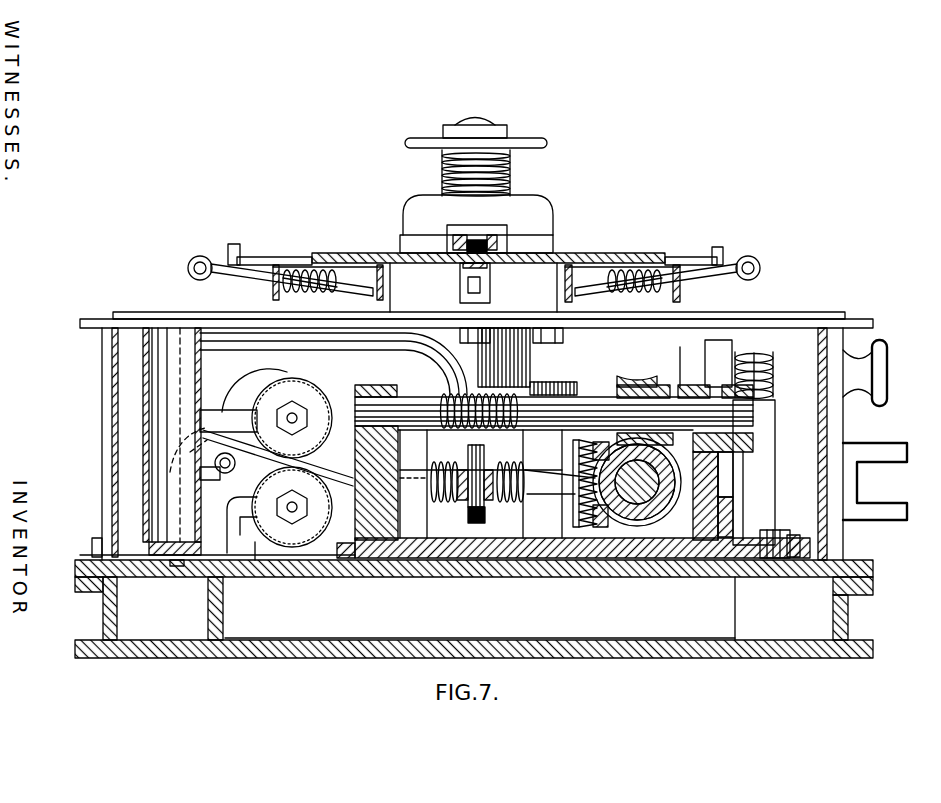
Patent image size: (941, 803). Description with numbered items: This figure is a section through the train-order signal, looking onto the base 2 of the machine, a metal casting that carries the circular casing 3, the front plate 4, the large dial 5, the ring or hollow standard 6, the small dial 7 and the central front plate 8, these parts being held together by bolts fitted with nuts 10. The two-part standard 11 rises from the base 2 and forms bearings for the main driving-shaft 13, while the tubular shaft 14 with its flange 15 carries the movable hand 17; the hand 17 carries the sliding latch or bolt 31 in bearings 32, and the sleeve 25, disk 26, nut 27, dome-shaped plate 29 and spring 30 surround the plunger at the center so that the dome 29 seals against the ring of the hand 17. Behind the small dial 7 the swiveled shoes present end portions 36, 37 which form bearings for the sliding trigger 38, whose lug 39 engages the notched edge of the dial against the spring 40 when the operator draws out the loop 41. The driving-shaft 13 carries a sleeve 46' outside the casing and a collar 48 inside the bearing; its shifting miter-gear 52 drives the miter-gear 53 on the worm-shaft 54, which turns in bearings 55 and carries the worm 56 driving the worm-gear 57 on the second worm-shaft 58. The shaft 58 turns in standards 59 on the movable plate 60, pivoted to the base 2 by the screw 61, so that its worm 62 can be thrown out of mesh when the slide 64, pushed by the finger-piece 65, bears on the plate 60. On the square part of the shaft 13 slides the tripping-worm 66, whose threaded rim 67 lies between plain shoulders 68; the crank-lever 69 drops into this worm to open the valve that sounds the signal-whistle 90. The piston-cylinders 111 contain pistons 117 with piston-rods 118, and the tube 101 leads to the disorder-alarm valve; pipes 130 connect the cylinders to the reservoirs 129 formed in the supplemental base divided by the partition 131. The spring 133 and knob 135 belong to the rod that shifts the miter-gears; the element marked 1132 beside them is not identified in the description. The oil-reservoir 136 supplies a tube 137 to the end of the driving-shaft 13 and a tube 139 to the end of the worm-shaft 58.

The base 2 is at (535, 576).
The casing 3 is at (848, 430).
The front plate 4 is at (848, 324).
The large dial 5 is at (812, 316).
The ring or hollow standard 6 is at (390, 304).
The small dial 7 is at (277, 272).
The central front plate 8 is at (327, 256).
The nuts 10 is at (469, 344).
The two-part standard 11 is at (415, 520).
The main driving-shaft 13 is at (735, 497).
The tubular shaft 14 is at (517, 357).
The flange 15 is at (582, 387).
The movable hand 17 is at (500, 243).
The sleeve 25 is at (506, 163).
The disk 26 is at (536, 143).
The nut 27 is at (497, 133).
The dome-shaped plate 29 is at (538, 210).
The spring 30 is at (506, 187).
The sliding latch or bolt 31 is at (452, 238).
The bearings 32 is at (470, 240).
The end portion of shoe 36 is at (391, 282).
The slotted end portion of shoe 37 is at (262, 286).
The sliding trigger 38 is at (230, 285).
The lug 39 is at (236, 256).
The spring 40 is at (322, 291).
The loop 41 is at (195, 278).
The sleeve 46' is at (875, 491).
The collar 48 is at (765, 476).
The miter-gear 52 is at (560, 494).
The miter-gear 53 is at (594, 488).
The worm-shaft 54 is at (600, 460).
The bearings 55 is at (637, 498).
The worm 56 is at (552, 472).
The worm-gear 57 is at (634, 383).
The second worm-shaft 58 is at (554, 411).
The bearings or standards 59 is at (746, 513).
The movable plate 60 is at (483, 546).
The screw or pivot 61 is at (768, 548).
The worm 62 is at (513, 416).
The slide 64 is at (257, 562).
The finger-piece 65 is at (90, 540).
The tripping-worm 66 is at (438, 480).
The threaded rim 67 is at (476, 481).
The plain shoulder 68 is at (460, 464).
The crank-lever 69 is at (520, 466).
The signal-whistle 90 is at (690, 350).
The tube 101 is at (225, 474).
The piston-cylinders 111 is at (321, 394).
The piston 117 is at (292, 451).
The piston-rod 118 is at (292, 424).
The reservoirs 129 is at (480, 616).
The pipe 130 is at (175, 593).
The partition 131 is at (224, 620).
The spring 133 is at (772, 372).
The knob 135 is at (888, 383).
The oil-reservoir 136 is at (160, 440).
The tube 137 is at (252, 456).
The tube 139 is at (262, 348).
The spring seat 1132 is at (728, 358).